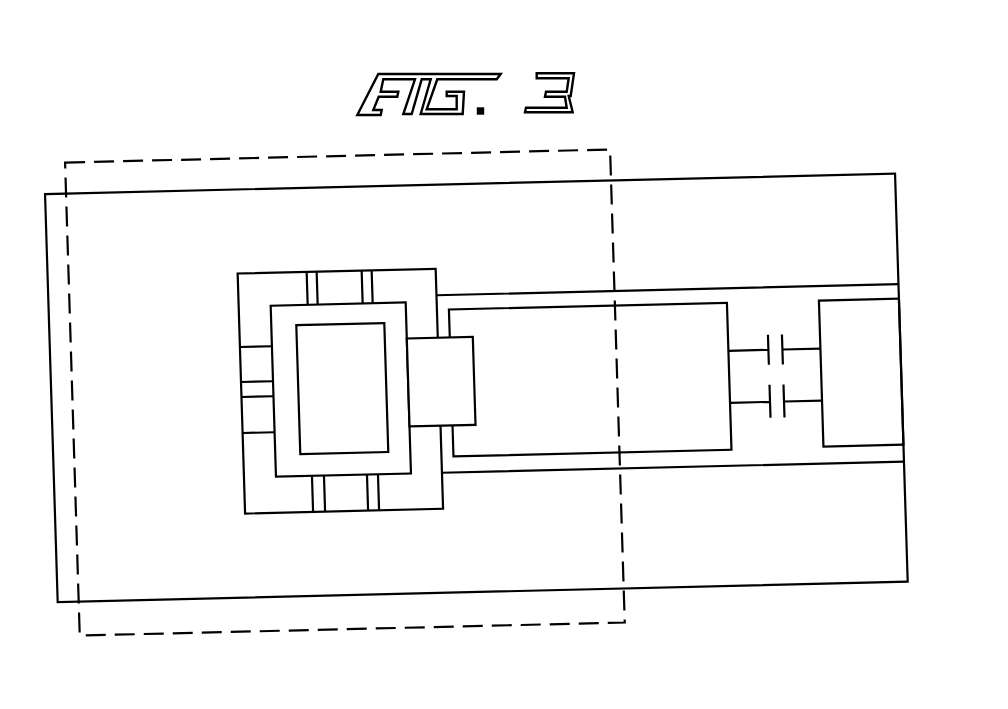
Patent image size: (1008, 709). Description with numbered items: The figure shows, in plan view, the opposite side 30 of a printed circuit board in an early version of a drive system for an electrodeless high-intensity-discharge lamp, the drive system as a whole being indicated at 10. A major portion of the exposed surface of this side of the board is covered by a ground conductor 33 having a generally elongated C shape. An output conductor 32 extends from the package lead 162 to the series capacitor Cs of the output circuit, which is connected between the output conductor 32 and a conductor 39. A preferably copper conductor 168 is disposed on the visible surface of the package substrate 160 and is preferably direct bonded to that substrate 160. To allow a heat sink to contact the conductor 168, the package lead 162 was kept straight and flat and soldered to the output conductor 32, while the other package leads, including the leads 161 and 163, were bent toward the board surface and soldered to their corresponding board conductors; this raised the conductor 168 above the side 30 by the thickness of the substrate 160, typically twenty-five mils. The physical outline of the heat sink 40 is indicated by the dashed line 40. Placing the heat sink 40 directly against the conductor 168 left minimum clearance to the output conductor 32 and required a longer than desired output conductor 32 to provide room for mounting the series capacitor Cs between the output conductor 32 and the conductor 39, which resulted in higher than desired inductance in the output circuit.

The integrated circuit device 10 is at (627, 168).
The opposite side of the circuit board 30 is at (50, 194).
The ground conductor 33 is at (155, 217).
The heat sink 40 is at (607, 632).
The package substrate 160 is at (377, 324).
The package lead 161 is at (242, 364).
The package lead 163 is at (248, 429).
The conductor 168 is at (352, 408).
The package lead 162 is at (438, 388).
The output conductor 32 is at (678, 409).
The conductor 39 is at (870, 409).
The series capacitor Cs is at (749, 359).